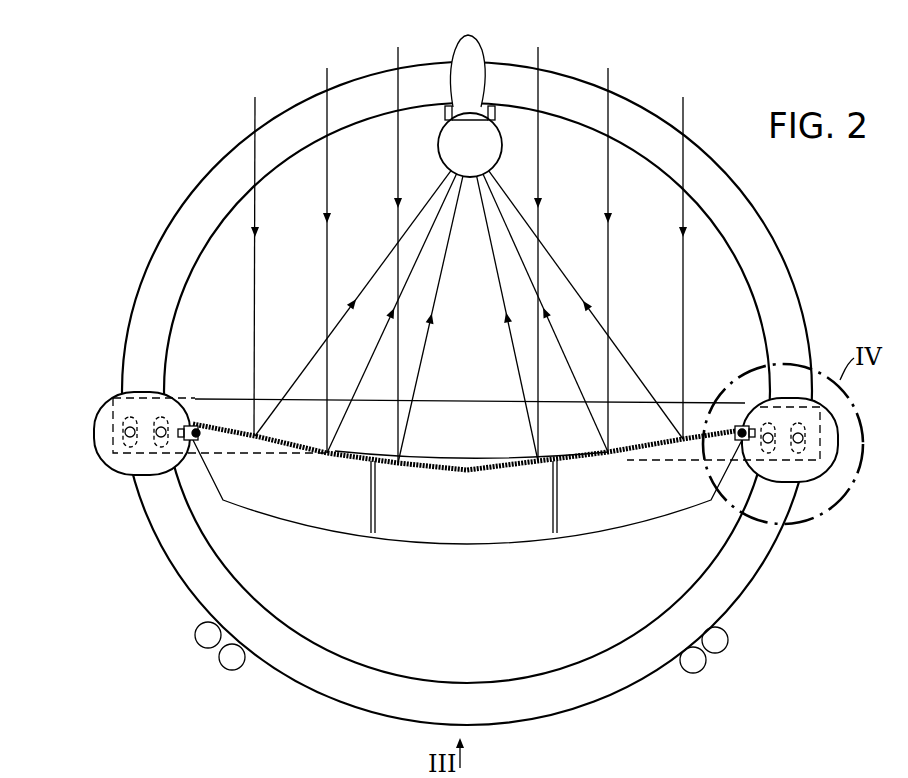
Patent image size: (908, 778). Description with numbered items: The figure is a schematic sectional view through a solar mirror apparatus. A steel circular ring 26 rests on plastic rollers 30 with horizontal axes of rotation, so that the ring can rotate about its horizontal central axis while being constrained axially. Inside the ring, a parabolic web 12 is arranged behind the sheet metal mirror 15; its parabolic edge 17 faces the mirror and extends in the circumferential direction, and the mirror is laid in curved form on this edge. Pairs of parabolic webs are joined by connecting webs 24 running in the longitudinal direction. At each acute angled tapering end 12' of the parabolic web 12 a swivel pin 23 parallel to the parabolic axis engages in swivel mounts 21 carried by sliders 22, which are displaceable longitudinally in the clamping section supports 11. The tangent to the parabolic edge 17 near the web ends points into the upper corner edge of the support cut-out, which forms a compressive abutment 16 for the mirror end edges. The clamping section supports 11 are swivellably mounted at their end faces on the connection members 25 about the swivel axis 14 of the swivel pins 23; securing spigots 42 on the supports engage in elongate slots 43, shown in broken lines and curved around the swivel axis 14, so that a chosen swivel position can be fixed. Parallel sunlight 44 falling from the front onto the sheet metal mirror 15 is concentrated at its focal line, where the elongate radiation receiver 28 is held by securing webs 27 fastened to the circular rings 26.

The clamping section support 11 is at (110, 472).
The parabolic web 12 is at (467, 509).
The acute angled tapering end 12' is at (463, 509).
The swivel axis 14 is at (199, 422).
The sheet metal mirror 15 is at (467, 466).
The compressive abutment 16 is at (181, 400).
The parabolic edge 17 is at (488, 475).
The swivel mount 21 is at (203, 424).
The slider 22 is at (210, 443).
The swivel pin 23 is at (181, 470).
The connecting web 24 is at (375, 533).
The connection member 25 is at (433, 415).
The circular ring 26 is at (187, 222).
The securing web 27 is at (470, 77).
The radiation receiver 28 is at (490, 160).
The plastic roller 30 is at (225, 658).
The securing spigot 42 is at (159, 429).
The elongate slot 43 is at (160, 416).
The parallel sunlight 44 is at (326, 210).